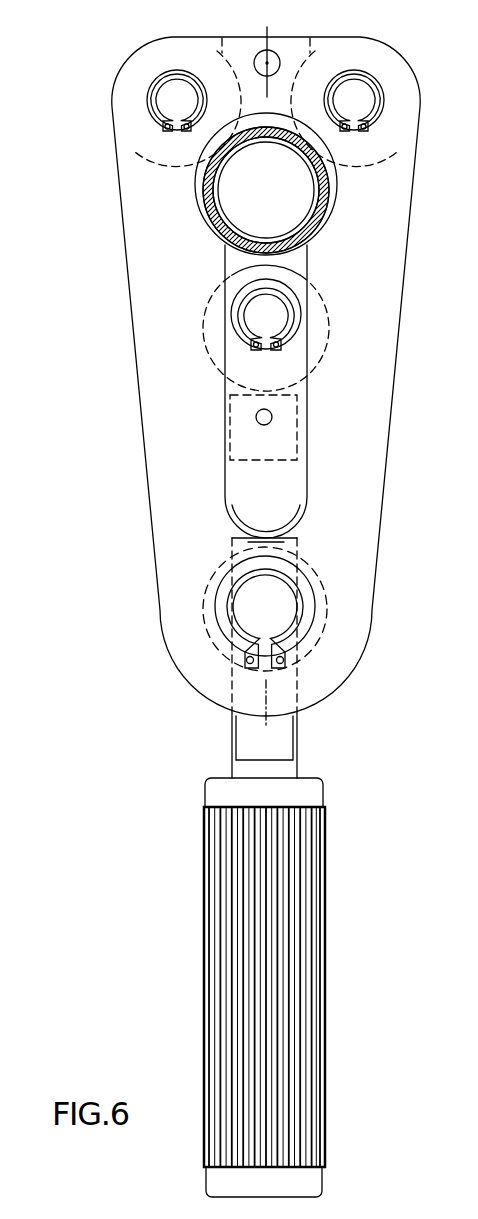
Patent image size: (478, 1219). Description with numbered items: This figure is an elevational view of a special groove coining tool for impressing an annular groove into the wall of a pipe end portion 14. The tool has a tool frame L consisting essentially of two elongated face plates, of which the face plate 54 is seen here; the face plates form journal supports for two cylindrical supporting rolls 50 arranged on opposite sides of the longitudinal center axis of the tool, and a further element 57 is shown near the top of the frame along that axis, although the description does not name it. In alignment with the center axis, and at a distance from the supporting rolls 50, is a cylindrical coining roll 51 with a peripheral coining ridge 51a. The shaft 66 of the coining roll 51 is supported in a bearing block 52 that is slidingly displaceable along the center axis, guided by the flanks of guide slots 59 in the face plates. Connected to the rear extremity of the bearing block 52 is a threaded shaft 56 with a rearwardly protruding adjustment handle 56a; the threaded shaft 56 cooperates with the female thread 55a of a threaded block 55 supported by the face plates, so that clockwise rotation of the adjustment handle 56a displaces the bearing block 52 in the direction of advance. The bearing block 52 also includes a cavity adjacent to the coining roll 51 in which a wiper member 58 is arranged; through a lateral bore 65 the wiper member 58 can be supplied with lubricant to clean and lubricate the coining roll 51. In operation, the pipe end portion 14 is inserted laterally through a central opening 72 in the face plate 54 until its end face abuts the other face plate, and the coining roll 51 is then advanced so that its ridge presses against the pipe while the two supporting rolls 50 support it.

The end portion of a pipe 14 is at (328, 188).
The cylindrical supporting rolls 50 is at (147, 66).
The cylindrical coining roll 51 is at (293, 278).
The peripheral coining ridge 51a is at (237, 257).
The bearing block 52 is at (290, 490).
The face plate 54 is at (377, 363).
The threaded block 55 is at (298, 603).
The female thread 55a is at (293, 623).
The threaded shaft 56 is at (240, 725).
The adjustment handle 56a is at (212, 848).
The pin 57 is at (288, 50).
The wiper member 58 is at (290, 437).
The guide slots 59 is at (222, 493).
The lateral bore 65 is at (256, 417).
The shaft of the coining roll 66 is at (257, 317).
The central opening 72 is at (197, 172).
The tool frame L is at (147, 467).